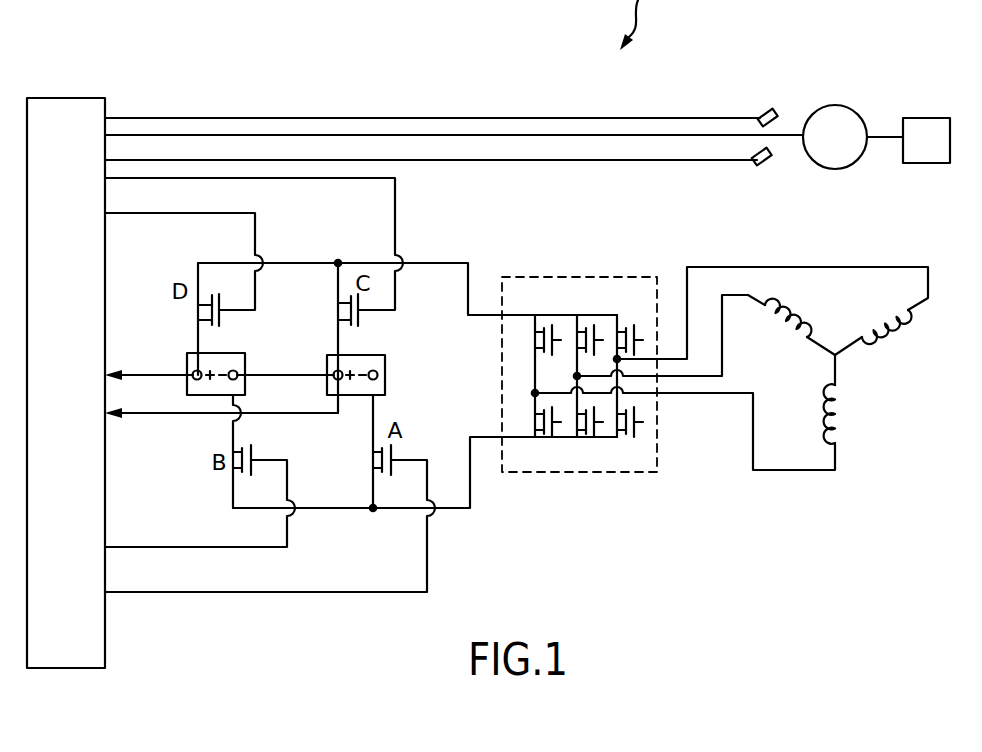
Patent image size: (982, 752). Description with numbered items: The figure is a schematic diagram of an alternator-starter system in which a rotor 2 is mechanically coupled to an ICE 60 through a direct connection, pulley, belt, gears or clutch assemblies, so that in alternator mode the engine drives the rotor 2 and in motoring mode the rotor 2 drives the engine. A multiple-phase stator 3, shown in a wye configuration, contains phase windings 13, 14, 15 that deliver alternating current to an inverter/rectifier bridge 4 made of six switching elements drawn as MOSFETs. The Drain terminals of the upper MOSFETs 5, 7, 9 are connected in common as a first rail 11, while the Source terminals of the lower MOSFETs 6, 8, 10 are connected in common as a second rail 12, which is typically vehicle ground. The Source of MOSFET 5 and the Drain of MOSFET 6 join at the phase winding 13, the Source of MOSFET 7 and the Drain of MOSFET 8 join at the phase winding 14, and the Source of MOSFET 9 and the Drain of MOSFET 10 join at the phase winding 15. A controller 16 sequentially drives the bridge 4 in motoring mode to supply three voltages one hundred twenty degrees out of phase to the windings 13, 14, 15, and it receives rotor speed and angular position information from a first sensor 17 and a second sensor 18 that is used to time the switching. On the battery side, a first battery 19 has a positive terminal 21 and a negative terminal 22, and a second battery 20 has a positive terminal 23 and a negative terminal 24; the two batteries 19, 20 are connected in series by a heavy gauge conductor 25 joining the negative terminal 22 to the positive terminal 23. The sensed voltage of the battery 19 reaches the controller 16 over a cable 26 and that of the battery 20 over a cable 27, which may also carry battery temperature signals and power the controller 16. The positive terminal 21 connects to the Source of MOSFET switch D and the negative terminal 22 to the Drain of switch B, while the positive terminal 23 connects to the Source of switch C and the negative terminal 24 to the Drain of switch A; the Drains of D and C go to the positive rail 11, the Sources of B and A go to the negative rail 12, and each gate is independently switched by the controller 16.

The controller 16 is at (72, 98).
The first sensor 17 is at (773, 110).
The second sensor 18 is at (780, 148).
The rotor 2 is at (865, 117).
The ICE 60 is at (922, 163).
The first rail 11 is at (490, 313).
The second rail 12 is at (483, 440).
The inverter/rectifier bridge 4 is at (506, 277).
The MOSFET 5 is at (545, 316).
The MOSFET 7 is at (587, 316).
The MOSFET 9 is at (628, 316).
The MOSFET 6 is at (542, 438).
The MOSFET 8 is at (584, 438).
The MOSFET 10 is at (622, 438).
The multiple-phase stator 3 is at (735, 378).
The phase winding 13 is at (846, 410).
The phase winding 14 is at (779, 331).
The phase winding 15 is at (898, 337).
The first battery 19 is at (215, 351).
The second battery 20 is at (369, 350).
The positive terminal 21 is at (212, 364).
The negative terminal 22 is at (238, 374).
The positive terminal 23 is at (352, 366).
The negative terminal 24 is at (378, 375).
The heavy gauge conductor 25 is at (295, 378).
The cable/conductor 26 is at (132, 372).
The cable/conductor 27 is at (134, 416).